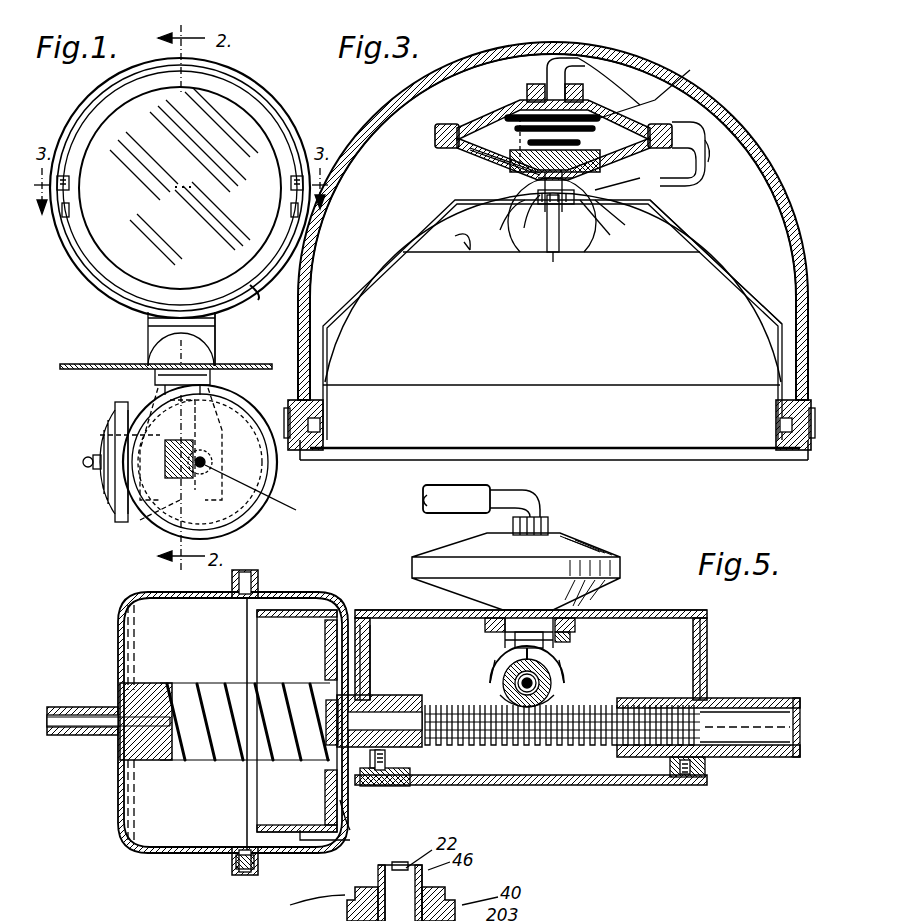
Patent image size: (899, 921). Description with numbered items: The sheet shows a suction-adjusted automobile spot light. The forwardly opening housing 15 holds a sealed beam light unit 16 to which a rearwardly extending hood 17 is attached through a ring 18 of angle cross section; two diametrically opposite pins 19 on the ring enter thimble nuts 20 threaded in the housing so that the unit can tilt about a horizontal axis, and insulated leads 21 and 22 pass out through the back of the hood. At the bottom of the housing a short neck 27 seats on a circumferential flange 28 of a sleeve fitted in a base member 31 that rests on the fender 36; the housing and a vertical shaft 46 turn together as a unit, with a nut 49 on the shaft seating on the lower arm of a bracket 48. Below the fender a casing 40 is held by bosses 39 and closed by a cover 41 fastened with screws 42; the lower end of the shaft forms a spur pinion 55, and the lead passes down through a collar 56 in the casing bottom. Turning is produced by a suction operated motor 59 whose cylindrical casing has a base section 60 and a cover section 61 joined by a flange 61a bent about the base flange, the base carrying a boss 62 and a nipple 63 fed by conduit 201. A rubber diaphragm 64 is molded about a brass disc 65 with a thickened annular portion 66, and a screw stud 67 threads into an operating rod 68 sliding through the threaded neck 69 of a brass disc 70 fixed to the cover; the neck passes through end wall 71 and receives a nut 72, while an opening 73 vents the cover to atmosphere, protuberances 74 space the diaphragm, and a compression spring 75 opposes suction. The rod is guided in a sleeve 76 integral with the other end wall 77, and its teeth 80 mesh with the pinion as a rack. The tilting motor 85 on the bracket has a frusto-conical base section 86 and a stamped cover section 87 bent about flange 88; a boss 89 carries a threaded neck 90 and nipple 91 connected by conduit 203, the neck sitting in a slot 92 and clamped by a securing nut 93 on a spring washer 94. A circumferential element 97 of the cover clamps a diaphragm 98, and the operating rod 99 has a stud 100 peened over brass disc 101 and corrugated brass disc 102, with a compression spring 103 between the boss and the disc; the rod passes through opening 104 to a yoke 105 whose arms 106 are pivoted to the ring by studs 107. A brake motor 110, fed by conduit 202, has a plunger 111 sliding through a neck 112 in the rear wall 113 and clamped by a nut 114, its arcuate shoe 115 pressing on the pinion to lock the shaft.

In FIG. 1, the housing 15 is at (243, 88).
In FIG. 3, the housing 15 is at (730, 125).
In FIG. 1, the lamp or light unit 16 is at (96, 287).
In FIG. 3, the lamp or light unit 16 is at (395, 462).
In FIG. 3, the hood 17 is at (393, 262).
In FIG. 1, the ring 18 is at (252, 290).
In FIG. 3, the ring 18 is at (372, 385).
In FIG. 3, the pins 19 is at (325, 405).
In FIG. 1, the thimble nuts 20 is at (68, 183).
In FIG. 3, the thimble nuts 20 is at (806, 450).
In FIG. 3, the lead 21 is at (465, 252).
In FIG. 3, the lead 22 is at (560, 252).
In FIG. 5, the lead 22 is at (510, 662).
In FIG. 1, the neck 27 is at (148, 318).
In FIG. 1, the circumferential flange 28 is at (217, 320).
In FIG. 1, the base member 31 is at (158, 348).
In FIG. 1, the fender 36 is at (78, 364).
In FIG. 1, the bosses 39 is at (155, 380).
In FIG. 1, the casing 40 is at (242, 520).
In FIG. 5, the casing 40 is at (712, 614).
In FIG. 5, the cover 41 is at (615, 786).
In FIG. 5, the screws 42 is at (680, 777).
In FIG. 1, the shaft 46 is at (110, 431).
In FIG. 3, the shaft 46 is at (553, 262).
In FIG. 5, the shaft 46 is at (500, 690).
In FIG. 3, the bracket 48 is at (527, 95).
In FIG. 3, the nut 49 is at (525, 248).
In FIG. 1, the spur pinion 55 is at (145, 522).
In FIG. 5, the spur pinion 55 is at (552, 680).
In FIG. 5, the collar 56 is at (556, 690).
In FIG. 1, the suction operated motor 59 is at (277, 467).
In FIG. 5, the suction operated motor 59 is at (124, 835).
In FIG. 5, the base section 60 is at (122, 612).
In FIG. 5, the cover section 61 is at (300, 602).
In FIG. 5, the circumferential flange 61a is at (245, 875).
In FIG. 5, the boss 62 is at (172, 760).
In FIG. 5, the nipple 63 is at (98, 706).
In FIG. 5, the diaphragm 64 is at (285, 830).
In FIG. 5, the brass disc 65 is at (325, 632).
In FIG. 5, the thickened annular portion 66 is at (325, 660).
In FIG. 5, the screw stud 67 is at (325, 740).
In FIG. 5, the operating rod 68 is at (395, 768).
In FIG. 5, the neck 69 is at (385, 750).
In FIG. 5, the brass disc 70 is at (372, 640).
In FIG. 5, the end wall 71 is at (372, 660).
In FIG. 5, the nut 72 is at (395, 752).
In FIG. 5, the opening 73 is at (352, 840).
In FIG. 5, the protuberances 74 is at (352, 815).
In FIG. 5, the compression spring 75 is at (198, 683).
In FIG. 5, the sleeve 76 is at (760, 757).
In FIG. 5, the end wall 77 is at (708, 662).
In FIG. 5, the ribs or teeth 80 is at (545, 745).
In FIG. 3, the tilting motor 85 is at (597, 108).
In FIG. 3, the base section 86 is at (478, 115).
In FIG. 3, the cover section 87 is at (470, 160).
In FIG. 1, the circumferential flange 88 is at (213, 462).
In FIG. 3, the circumferential flange 88 is at (435, 135).
In FIG. 3, the boss 89 is at (660, 130).
In FIG. 3, the neck 90 is at (548, 78).
In FIG. 3, the nipple 91 is at (578, 58).
In FIG. 3, the slot 92 is at (590, 125).
In FIG. 3, the securing nut 93 is at (572, 112).
In FIG. 3, the spring washer 94 is at (535, 140).
In FIG. 3, the circumferential element 97 is at (678, 170).
In FIG. 3, the diaphragm 98 is at (618, 190).
In FIG. 3, the operating rod 99 is at (515, 215).
In FIG. 3, the stud 100 is at (522, 200).
In FIG. 3, the brass disc 101 is at (515, 165).
In FIG. 3, the corrugated brass disc 102 is at (500, 155).
In FIG. 3, the compression spring 103 is at (660, 81).
In FIG. 3, the opening 104 is at (608, 224).
In FIG. 3, the yoke 105 is at (705, 246).
In FIG. 1, the arms 106 is at (64, 217).
In FIG. 3, the arms 106 is at (340, 340).
In FIG. 3, the studs 107 is at (322, 425).
In FIG. 1, the brake motor 110 is at (115, 405).
In FIG. 5, the brake motor 110 is at (640, 556).
In FIG. 5, the plunger 111 is at (560, 650).
In FIG. 5, the neck 112 is at (510, 632).
In FIG. 5, the rear wall 113 is at (428, 610).
In FIG. 5, the nut 114 is at (487, 630).
In FIG. 5, the arcuate shoe 115 is at (560, 668).
In FIG. 1, the conduit 201 is at (267, 495).
In FIG. 5, the conduit 201 is at (53, 735).
In FIG. 1, the conduit 202 is at (88, 468).
In FIG. 5, the conduit 202 is at (455, 505).
In FIG. 3, the conduit 203 is at (705, 160).
In FIG. 5, the conduit 203 is at (603, 639).